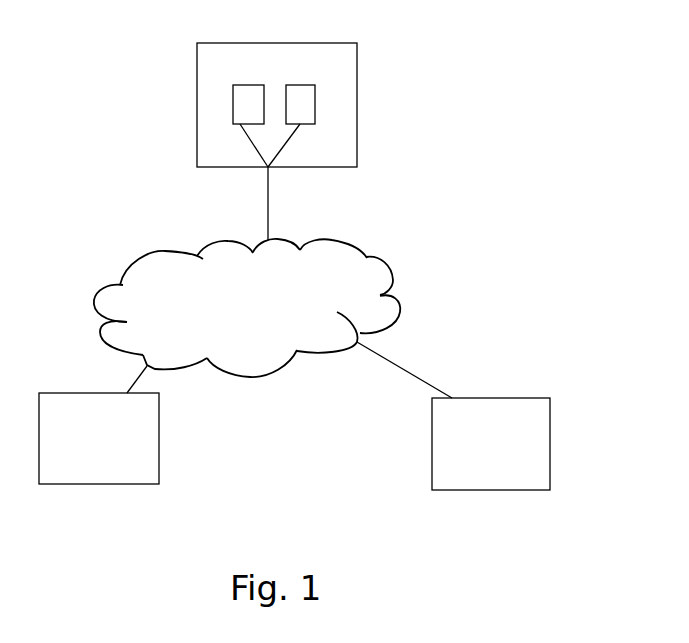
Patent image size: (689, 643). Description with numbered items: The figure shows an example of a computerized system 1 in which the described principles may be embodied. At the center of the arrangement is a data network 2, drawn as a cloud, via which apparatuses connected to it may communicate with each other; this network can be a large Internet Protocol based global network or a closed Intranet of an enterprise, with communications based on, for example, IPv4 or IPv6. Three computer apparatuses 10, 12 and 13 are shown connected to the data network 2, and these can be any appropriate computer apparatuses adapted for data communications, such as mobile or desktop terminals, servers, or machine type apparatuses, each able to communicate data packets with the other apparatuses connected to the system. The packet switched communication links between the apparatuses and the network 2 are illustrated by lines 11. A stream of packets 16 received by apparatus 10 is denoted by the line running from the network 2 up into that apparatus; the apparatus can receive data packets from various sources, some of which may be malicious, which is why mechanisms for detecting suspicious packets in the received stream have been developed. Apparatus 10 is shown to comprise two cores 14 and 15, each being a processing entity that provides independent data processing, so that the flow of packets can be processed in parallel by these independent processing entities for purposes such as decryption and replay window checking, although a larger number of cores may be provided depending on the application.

The computerized system 1 is at (134, 43).
The data network 2 is at (168, 252).
The computer apparatus 10 is at (352, 63).
The communication links 11 is at (422, 378).
The computer apparatus 12 is at (72, 440).
The computer apparatus 13 is at (455, 437).
The core 14 is at (238, 103).
The core 15 is at (305, 103).
The stream of packets 16 is at (272, 195).